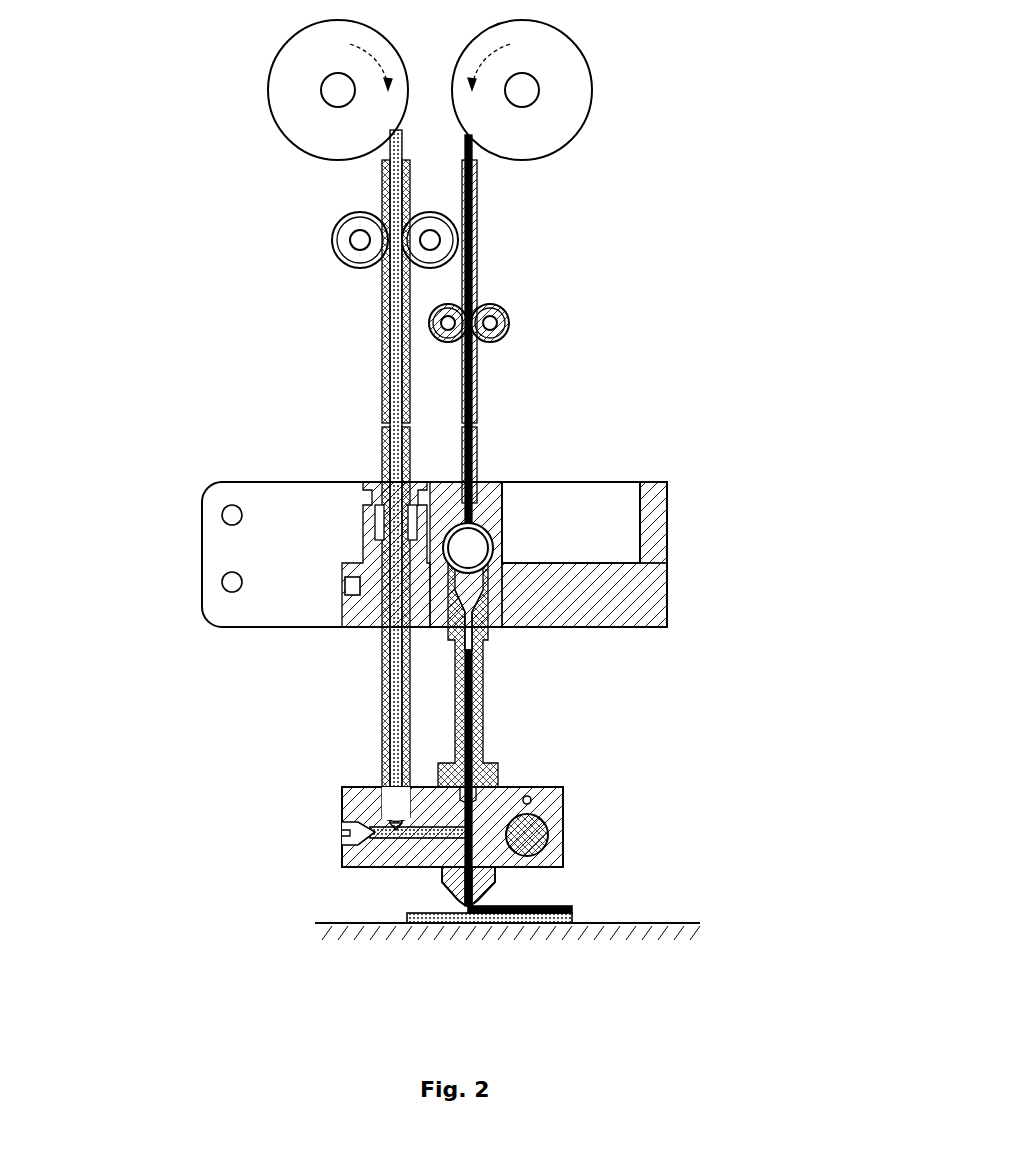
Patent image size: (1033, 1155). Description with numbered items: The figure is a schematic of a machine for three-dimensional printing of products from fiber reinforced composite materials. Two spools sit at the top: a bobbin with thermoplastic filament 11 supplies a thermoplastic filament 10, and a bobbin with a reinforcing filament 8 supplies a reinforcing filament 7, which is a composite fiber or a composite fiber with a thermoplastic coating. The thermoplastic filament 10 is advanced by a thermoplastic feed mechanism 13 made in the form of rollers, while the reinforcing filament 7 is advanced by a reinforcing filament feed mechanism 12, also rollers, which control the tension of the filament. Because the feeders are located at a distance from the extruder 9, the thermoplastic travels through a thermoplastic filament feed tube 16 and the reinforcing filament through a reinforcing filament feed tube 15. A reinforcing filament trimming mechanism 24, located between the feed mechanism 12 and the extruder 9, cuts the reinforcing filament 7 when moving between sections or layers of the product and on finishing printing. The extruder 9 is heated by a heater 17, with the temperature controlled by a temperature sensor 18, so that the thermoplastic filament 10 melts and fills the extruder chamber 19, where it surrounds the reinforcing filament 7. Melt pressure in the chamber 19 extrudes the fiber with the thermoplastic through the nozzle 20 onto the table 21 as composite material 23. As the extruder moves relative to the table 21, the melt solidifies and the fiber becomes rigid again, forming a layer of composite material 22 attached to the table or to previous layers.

The reinforcing filament 7 is at (475, 407).
The bobbin with a reinforcing filament 8 is at (588, 118).
The extruder 9 is at (340, 858).
The thermoplastic filament 10 is at (395, 412).
The bobbin with thermoplastic filament 11 is at (305, 153).
The reinforcing filament feed mechanism 12 is at (500, 307).
The feed mechanism of thermoplastics 13 is at (333, 243).
The reinforcing filament feed tube 15 is at (477, 460).
The thermoplastic filament feed tube 16 is at (383, 467).
The heater 17 is at (565, 835).
The temperature sensor 18 is at (562, 787).
The chamber of extruder 19 is at (363, 785).
The nozzle 20 is at (440, 888).
The table 21 is at (610, 923).
The layer of composite material 22 is at (575, 908).
The composite material 23 is at (455, 925).
The reinforcing filament trimming mechanism 24 is at (497, 523).